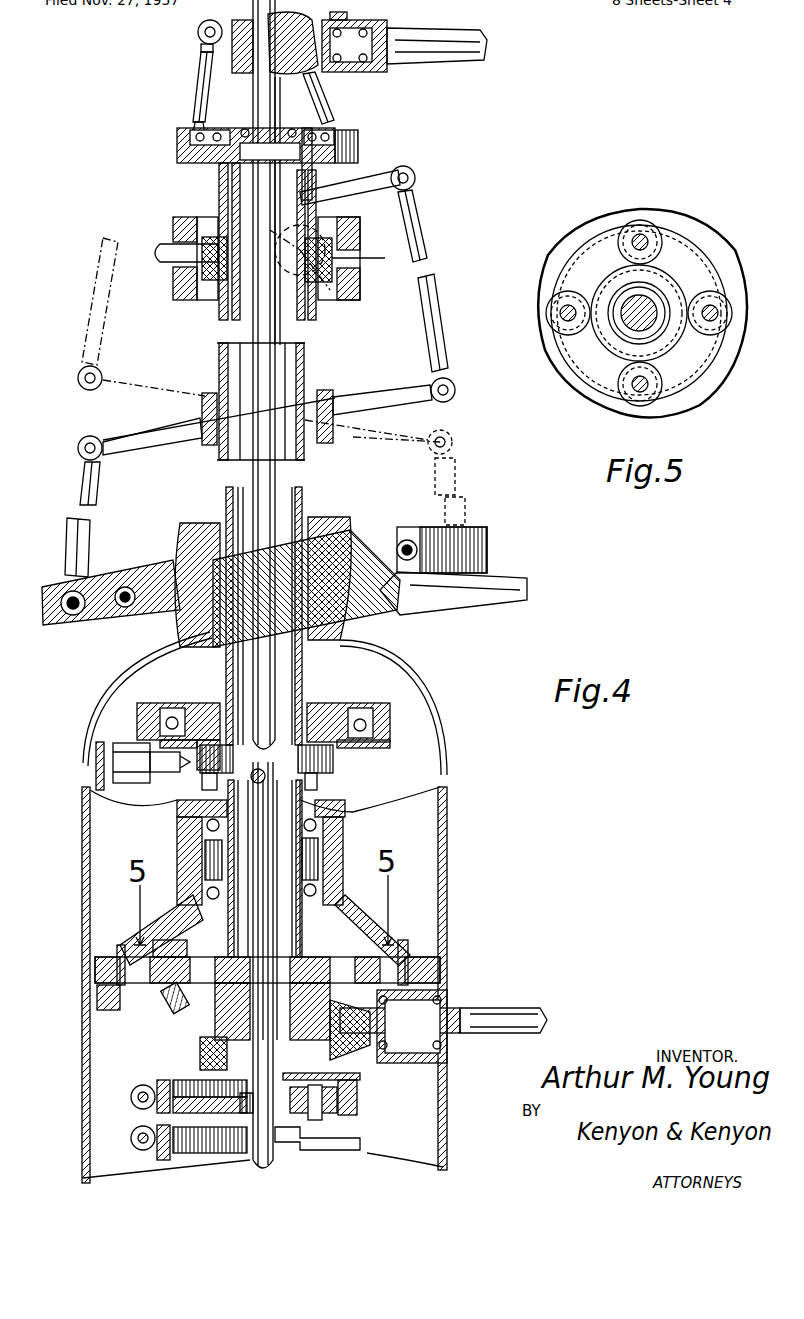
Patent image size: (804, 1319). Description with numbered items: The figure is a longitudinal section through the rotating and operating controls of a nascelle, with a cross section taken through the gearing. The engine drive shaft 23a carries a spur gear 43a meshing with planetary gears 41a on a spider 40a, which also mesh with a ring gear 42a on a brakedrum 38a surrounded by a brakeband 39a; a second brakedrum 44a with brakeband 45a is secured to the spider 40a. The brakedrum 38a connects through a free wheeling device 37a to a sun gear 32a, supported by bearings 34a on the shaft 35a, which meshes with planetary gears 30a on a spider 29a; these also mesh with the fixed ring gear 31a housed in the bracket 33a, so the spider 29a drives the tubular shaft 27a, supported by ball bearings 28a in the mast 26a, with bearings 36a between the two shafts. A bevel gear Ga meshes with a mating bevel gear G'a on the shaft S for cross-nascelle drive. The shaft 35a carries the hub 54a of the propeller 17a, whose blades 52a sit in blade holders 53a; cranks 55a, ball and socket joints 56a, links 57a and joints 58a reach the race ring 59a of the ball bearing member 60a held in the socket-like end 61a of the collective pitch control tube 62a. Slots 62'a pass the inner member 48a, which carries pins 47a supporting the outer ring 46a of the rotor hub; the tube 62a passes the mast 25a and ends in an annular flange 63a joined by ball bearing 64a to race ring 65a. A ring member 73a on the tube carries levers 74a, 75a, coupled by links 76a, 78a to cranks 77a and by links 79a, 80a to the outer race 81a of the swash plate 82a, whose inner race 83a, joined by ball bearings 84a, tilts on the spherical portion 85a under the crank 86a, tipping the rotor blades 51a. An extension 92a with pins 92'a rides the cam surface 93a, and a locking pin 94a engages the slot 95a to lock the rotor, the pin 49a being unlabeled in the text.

In FIG. 4, the propeller 17a is at (433, 28).
In FIG. 4, the drive shaft 23a is at (266, 1168).
In FIG. 4, the mast 25a is at (340, 640).
In FIG. 4, the mast 26a is at (405, 655).
In FIG. 4, the tubular shaft 27a is at (224, 498).
In FIG. 4, the ball bearings 28a is at (330, 900).
In FIG. 4, the spider 29a is at (318, 955).
In FIG. 5, the spider 29a is at (700, 265).
In FIG. 4, the planetary gears 30a is at (170, 1000).
In FIG. 5, the planetary gears 30a is at (640, 235).
In FIG. 4, the ring gear 31a is at (100, 995).
In FIG. 5, the ring gear 31a is at (703, 236).
In FIG. 4, the sun gear 32a is at (215, 958).
In FIG. 5, the sun gear 32a is at (617, 275).
In FIG. 4, the bracket 33a is at (190, 872).
In FIG. 4, the bearings 34a is at (305, 1022).
In FIG. 5, the bearings 34a is at (620, 330).
In FIG. 4, the shaft 35a is at (276, 678).
In FIG. 5, the shaft 35a is at (645, 300).
In FIG. 4, the bearings 36a is at (243, 130).
In FIG. 4, the free wheeling device 37a is at (205, 1053).
In FIG. 4, the brakedrum 38a is at (165, 1080).
In FIG. 4, the brakeband 39a is at (155, 1108).
In FIG. 4, the spider 40a is at (357, 1088).
In FIG. 4, the planetary gears 41a is at (190, 1100).
In FIG. 4, the ring gear 42a is at (150, 1135).
In FIG. 4, the spur gear 43a is at (290, 1128).
In FIG. 4, the brakedrum 44a is at (205, 1153).
In FIG. 4, the brakeband 45a is at (160, 1150).
In FIG. 4, the outer ring 46a is at (350, 300).
In FIG. 4, the pins 47a is at (180, 262).
In FIG. 4, the inner member 48a is at (200, 245).
In FIG. 4, the pin 49a is at (312, 305).
In FIG. 4, the rotor blades 51a is at (150, 255).
In FIG. 4, the blades 52a is at (465, 62).
In FIG. 4, the blade holders 53a is at (375, 72).
In FIG. 4, the hub 54a is at (290, 80).
In FIG. 4, the cranks 55a is at (198, 32).
In FIG. 4, the ball and socket joints 56a is at (203, 46).
In FIG. 4, the links 57a is at (205, 78).
In FIG. 4, the ball and socket joints 58a is at (185, 130).
In FIG. 4, the race ring 59a is at (185, 147).
In FIG. 4, the ball bearing member 60a is at (304, 155).
In FIG. 4, the socket-like end 61a is at (360, 142).
In FIG. 4, the collective pitch control tube 62a is at (222, 175).
In FIG. 4, the slots 62'a is at (197, 205).
In FIG. 4, the annular flange 63a is at (340, 705).
In FIG. 4, the ball bearing 64a is at (165, 710).
In FIG. 4, the race ring 65a is at (392, 722).
In FIG. 4, the ring member 73a is at (335, 395).
In FIG. 4, the lever 74a is at (135, 445).
In FIG. 4, the lever 75a is at (355, 440).
In FIG. 4, the link 76a is at (440, 315).
In FIG. 4, the crank 77a is at (395, 170).
In FIG. 4, the link 78a is at (85, 333).
In FIG. 4, the link 79a is at (75, 490).
In FIG. 4, the link 80a is at (465, 500).
In FIG. 4, the outer race 81a is at (50, 625).
In FIG. 4, the swash plate 82a is at (97, 650).
In FIG. 4, the inner race 83a is at (148, 575).
In FIG. 4, the ball bearings 84a is at (125, 607).
In FIG. 4, the spherical portion 85a is at (325, 520).
In FIG. 4, the crank 86a is at (490, 600).
In FIG. 4, the extension 92a is at (335, 770).
In FIG. 4, the pins 92'a is at (373, 797).
In FIG. 4, the cam surface 93a is at (345, 815).
In FIG. 4, the locking pin 94a is at (160, 780).
In FIG. 4, the slot 95a is at (190, 770).
In FIG. 4, the bevel gear Ga is at (195, 1015).
In FIG. 4, the bevel gear G'a is at (382, 1067).
In FIG. 4, the shaft S is at (518, 1010).